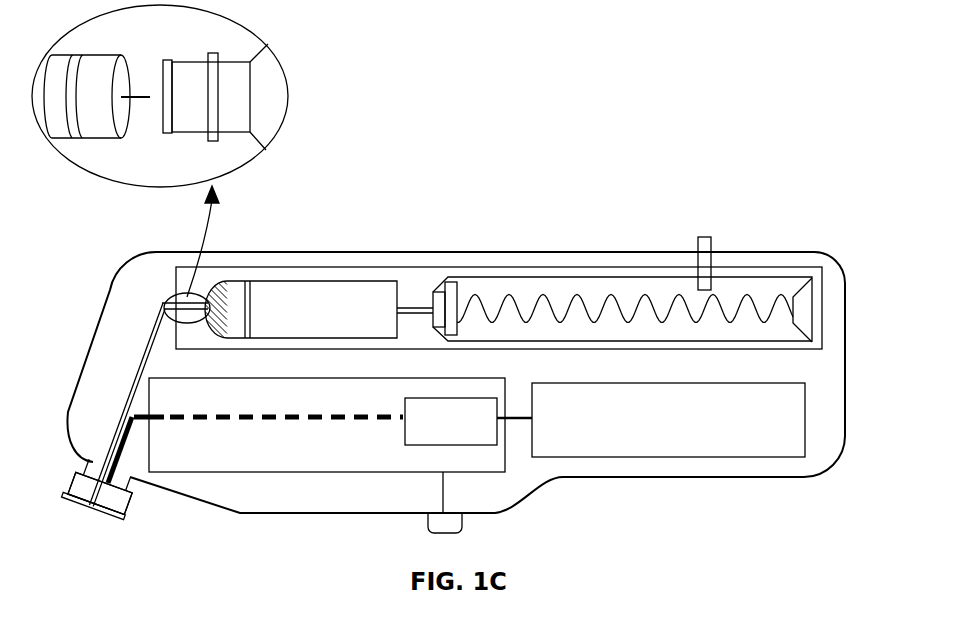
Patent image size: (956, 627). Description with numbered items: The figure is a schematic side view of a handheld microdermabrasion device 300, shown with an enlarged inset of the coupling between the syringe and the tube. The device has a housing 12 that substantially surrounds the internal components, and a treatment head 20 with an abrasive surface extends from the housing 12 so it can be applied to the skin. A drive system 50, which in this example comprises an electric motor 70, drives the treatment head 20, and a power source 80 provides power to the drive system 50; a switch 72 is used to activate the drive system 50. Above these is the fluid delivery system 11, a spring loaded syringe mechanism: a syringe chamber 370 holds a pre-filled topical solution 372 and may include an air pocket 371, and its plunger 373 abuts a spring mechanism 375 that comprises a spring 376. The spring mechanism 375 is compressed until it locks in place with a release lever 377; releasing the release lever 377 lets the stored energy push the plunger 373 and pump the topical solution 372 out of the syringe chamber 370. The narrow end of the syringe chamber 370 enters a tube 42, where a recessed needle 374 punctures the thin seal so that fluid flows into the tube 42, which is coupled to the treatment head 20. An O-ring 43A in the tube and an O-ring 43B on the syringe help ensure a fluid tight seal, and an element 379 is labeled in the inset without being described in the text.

The fluid delivery system 11 is at (798, 257).
The housing 12 is at (140, 252).
The treatment head 20 is at (133, 508).
The tube 42 is at (122, 53).
The O-ring 43A is at (77, 138).
The O-ring 43B is at (212, 142).
The drive system 50 is at (325, 378).
The electric motor 70 is at (442, 398).
The switch 72 is at (455, 531).
The power source 80 is at (657, 383).
The handheld microdermabrasion device 300 is at (725, 522).
The syringe chamber 370 is at (197, 62).
The air pocket 371 is at (238, 280).
The topical solution 372 is at (207, 293).
The plunger 373 is at (405, 303).
The needle 374 is at (143, 92).
The spring mechanism 375 is at (515, 278).
The spring 376 is at (610, 295).
The release lever 377 is at (707, 235).
The flange 379 is at (163, 127).